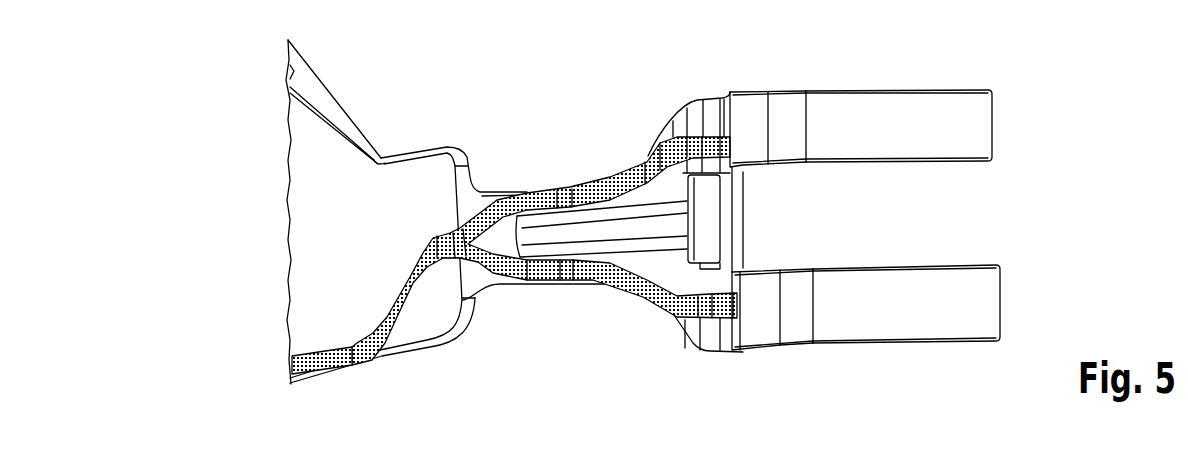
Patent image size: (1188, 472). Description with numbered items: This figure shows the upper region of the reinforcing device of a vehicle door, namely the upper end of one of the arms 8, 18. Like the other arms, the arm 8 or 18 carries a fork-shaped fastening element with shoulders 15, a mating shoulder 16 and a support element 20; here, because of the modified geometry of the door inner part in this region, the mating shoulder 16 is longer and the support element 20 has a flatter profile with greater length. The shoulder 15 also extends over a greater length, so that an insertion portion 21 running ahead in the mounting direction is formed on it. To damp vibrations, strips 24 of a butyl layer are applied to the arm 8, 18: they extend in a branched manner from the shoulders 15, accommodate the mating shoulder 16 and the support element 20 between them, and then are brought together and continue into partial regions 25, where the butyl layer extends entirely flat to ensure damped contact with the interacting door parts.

The arm 8 is at (310, 220).
The arm 18 is at (707, 107).
The shoulder 15 is at (783, 97).
The mating shoulder 16 is at (703, 217).
The support element 20 is at (610, 227).
The insertion portion 21 is at (895, 98).
The strips 24 is at (540, 200).
The partial regions 25 is at (322, 362).